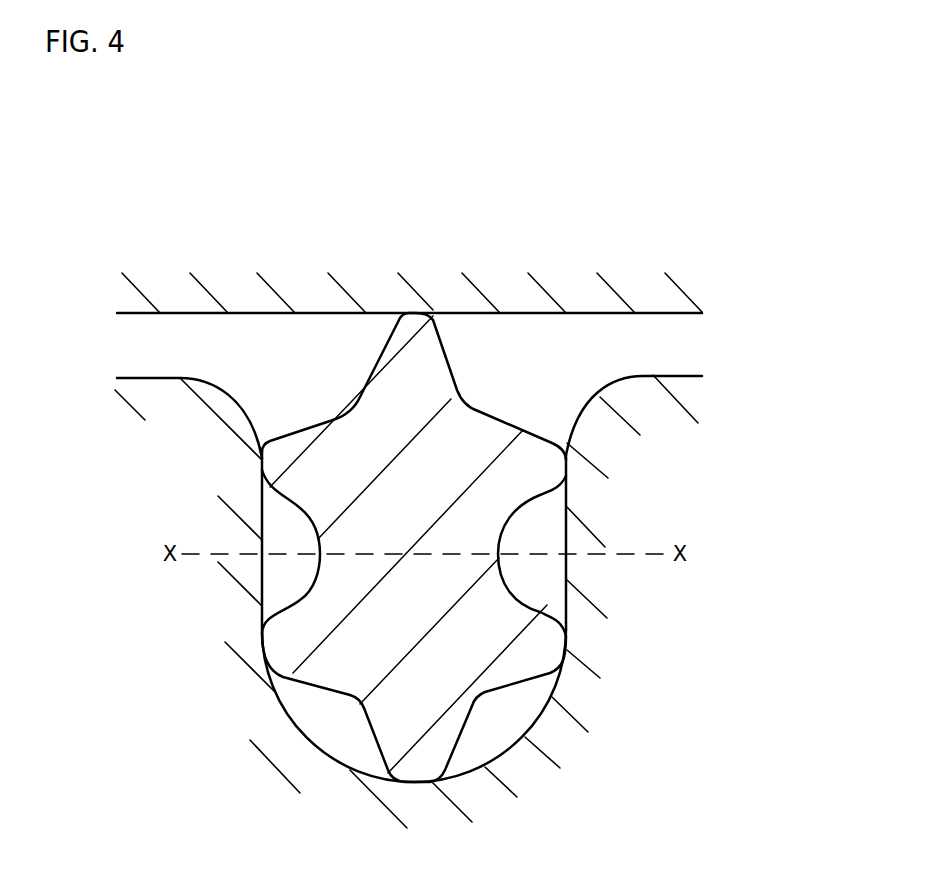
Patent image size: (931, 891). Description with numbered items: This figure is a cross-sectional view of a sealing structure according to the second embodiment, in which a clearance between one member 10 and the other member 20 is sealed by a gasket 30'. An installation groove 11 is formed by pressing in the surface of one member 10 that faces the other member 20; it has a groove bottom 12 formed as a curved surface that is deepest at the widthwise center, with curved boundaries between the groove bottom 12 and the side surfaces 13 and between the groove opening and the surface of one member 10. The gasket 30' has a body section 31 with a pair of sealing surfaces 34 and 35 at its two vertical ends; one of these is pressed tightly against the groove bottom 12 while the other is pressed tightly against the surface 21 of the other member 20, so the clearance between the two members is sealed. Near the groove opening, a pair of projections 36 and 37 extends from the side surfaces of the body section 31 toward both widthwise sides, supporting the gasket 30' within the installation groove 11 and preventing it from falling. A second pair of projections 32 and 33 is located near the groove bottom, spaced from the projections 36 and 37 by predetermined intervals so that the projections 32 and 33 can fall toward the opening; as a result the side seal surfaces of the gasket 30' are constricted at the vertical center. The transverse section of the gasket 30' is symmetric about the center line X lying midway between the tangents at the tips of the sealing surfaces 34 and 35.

The one member 10 is at (145, 377).
The installation groove 11 is at (362, 509).
The groove bottom 12 is at (325, 752).
The side surfaces 13 is at (262, 514).
The other member 20 is at (692, 320).
The surface 21 is at (611, 310).
The gasket 30' is at (414, 529).
The body section 31 is at (467, 570).
The projection 32 is at (280, 652).
The projection 33 is at (547, 653).
The sealing surface 34 is at (410, 313).
The sealing surface 35 is at (415, 785).
The projection 36 is at (272, 462).
The projection 37 is at (565, 465).